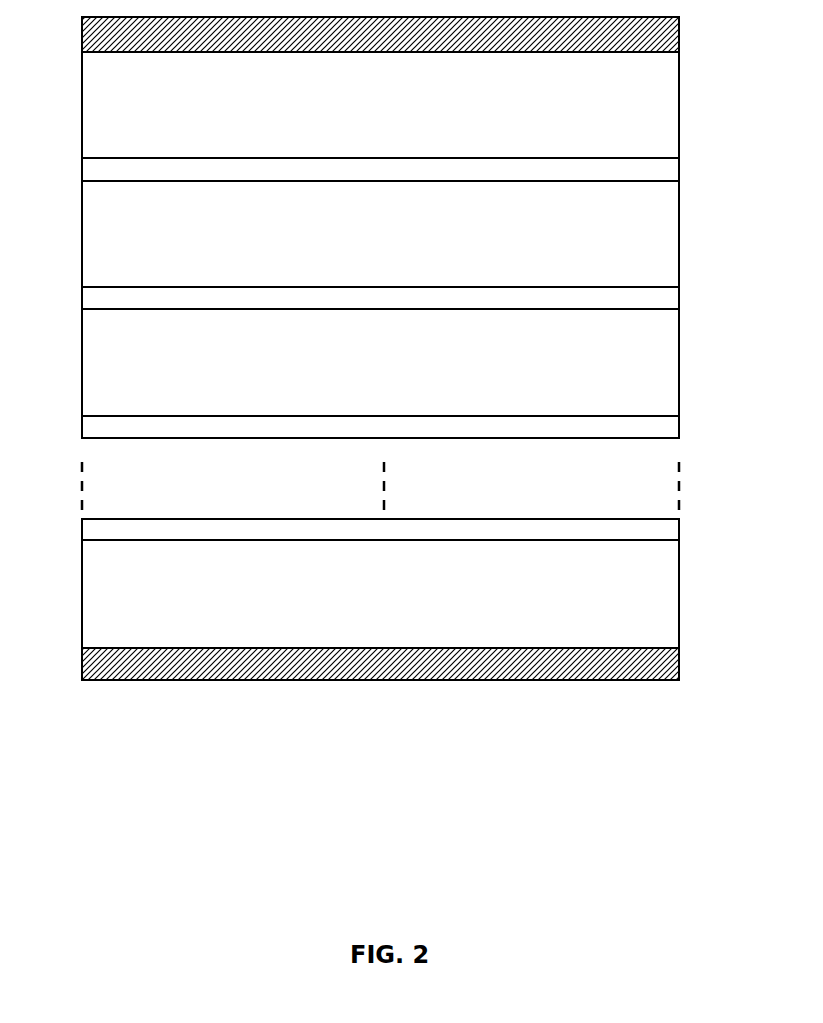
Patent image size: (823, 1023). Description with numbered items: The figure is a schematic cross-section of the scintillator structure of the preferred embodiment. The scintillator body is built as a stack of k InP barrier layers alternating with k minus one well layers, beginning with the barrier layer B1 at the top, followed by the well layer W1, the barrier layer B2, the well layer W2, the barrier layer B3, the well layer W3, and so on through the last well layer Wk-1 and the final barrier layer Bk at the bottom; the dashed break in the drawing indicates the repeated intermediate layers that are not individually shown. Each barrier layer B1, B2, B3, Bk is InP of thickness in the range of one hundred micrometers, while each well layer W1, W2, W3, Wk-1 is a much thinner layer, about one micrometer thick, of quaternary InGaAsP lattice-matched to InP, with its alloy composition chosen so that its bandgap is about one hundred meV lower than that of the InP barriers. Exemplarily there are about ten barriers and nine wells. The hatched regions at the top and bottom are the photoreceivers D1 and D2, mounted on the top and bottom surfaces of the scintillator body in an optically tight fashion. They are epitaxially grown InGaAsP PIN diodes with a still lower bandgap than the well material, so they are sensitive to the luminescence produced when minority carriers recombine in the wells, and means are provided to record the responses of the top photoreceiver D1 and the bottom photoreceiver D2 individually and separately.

The photoreceiver D1 is at (344, 39).
The photoreceiver D2 is at (344, 669).
The barrier layer B1 is at (380, 105).
The barrier layer B2 is at (380, 234).
The barrier layer B3 is at (380, 362).
The barrier layer Bk is at (380, 594).
The well layer W1 is at (413, 169).
The well layer W2 is at (413, 297).
The well layer W3 is at (413, 425).
The well layer Wk-1 is at (421, 532).